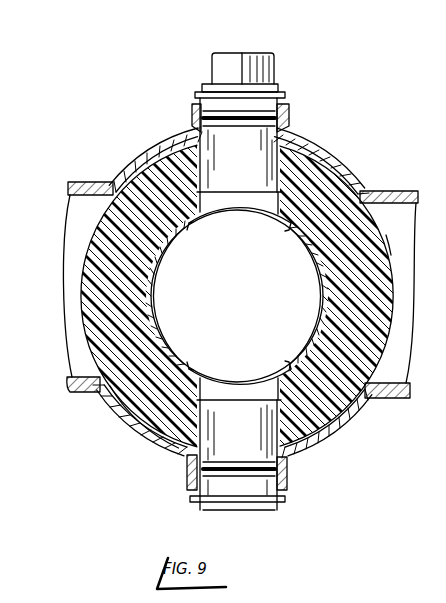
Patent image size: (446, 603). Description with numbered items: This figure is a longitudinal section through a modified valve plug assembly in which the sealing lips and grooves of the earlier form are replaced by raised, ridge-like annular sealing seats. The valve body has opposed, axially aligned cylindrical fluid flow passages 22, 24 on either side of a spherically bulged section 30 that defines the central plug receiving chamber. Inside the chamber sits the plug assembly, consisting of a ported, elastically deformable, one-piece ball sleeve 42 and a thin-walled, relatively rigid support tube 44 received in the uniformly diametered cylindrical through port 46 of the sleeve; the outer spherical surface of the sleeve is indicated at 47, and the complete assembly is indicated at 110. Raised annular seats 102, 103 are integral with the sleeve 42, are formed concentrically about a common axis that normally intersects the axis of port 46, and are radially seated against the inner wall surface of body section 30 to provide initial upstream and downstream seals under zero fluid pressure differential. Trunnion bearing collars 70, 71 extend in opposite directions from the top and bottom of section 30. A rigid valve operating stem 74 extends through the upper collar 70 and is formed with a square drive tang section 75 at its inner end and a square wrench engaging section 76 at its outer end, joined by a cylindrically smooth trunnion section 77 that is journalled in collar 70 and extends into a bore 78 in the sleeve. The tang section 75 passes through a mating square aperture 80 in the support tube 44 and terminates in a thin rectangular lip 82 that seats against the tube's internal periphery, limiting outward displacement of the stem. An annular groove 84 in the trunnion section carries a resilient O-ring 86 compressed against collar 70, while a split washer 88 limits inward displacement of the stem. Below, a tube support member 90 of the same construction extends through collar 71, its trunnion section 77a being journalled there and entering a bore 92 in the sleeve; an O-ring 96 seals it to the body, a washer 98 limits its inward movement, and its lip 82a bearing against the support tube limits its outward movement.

The fluid flow passage 22 is at (398, 386).
The fluid flow passage 24 is at (69, 374).
The spherically bulged section 30 is at (148, 434).
The ball sleeve 42 is at (374, 284).
The support tube 44 is at (162, 338).
The through port 46 is at (304, 252).
The ball outer surface 47 is at (378, 242).
The trunnion bearing collar 70 is at (290, 114).
The trunnion bearing collar 71 is at (189, 478).
The valve operating stem 74 is at (268, 60).
The drive tang section 75 is at (222, 204).
The wrench engaging section 76 is at (221, 58).
The trunnion section 77 is at (284, 140).
The trunnion section 77a is at (188, 458).
The bore 78 is at (194, 136).
The square aperture 80 is at (202, 226).
The lip 82 is at (252, 226).
The lip 82a is at (246, 378).
The annular groove 84 is at (207, 374).
The O-ring 86 is at (193, 113).
The split washer 88 is at (288, 95).
The tube support member 90 is at (261, 510).
The bore 92 is at (266, 426).
The O-ring 96 is at (278, 470).
The washer 98 is at (194, 501).
The raised annular seat 102 is at (142, 174).
The raised annular seat 103 is at (350, 178).
The valve assembly 110 is at (438, 292).